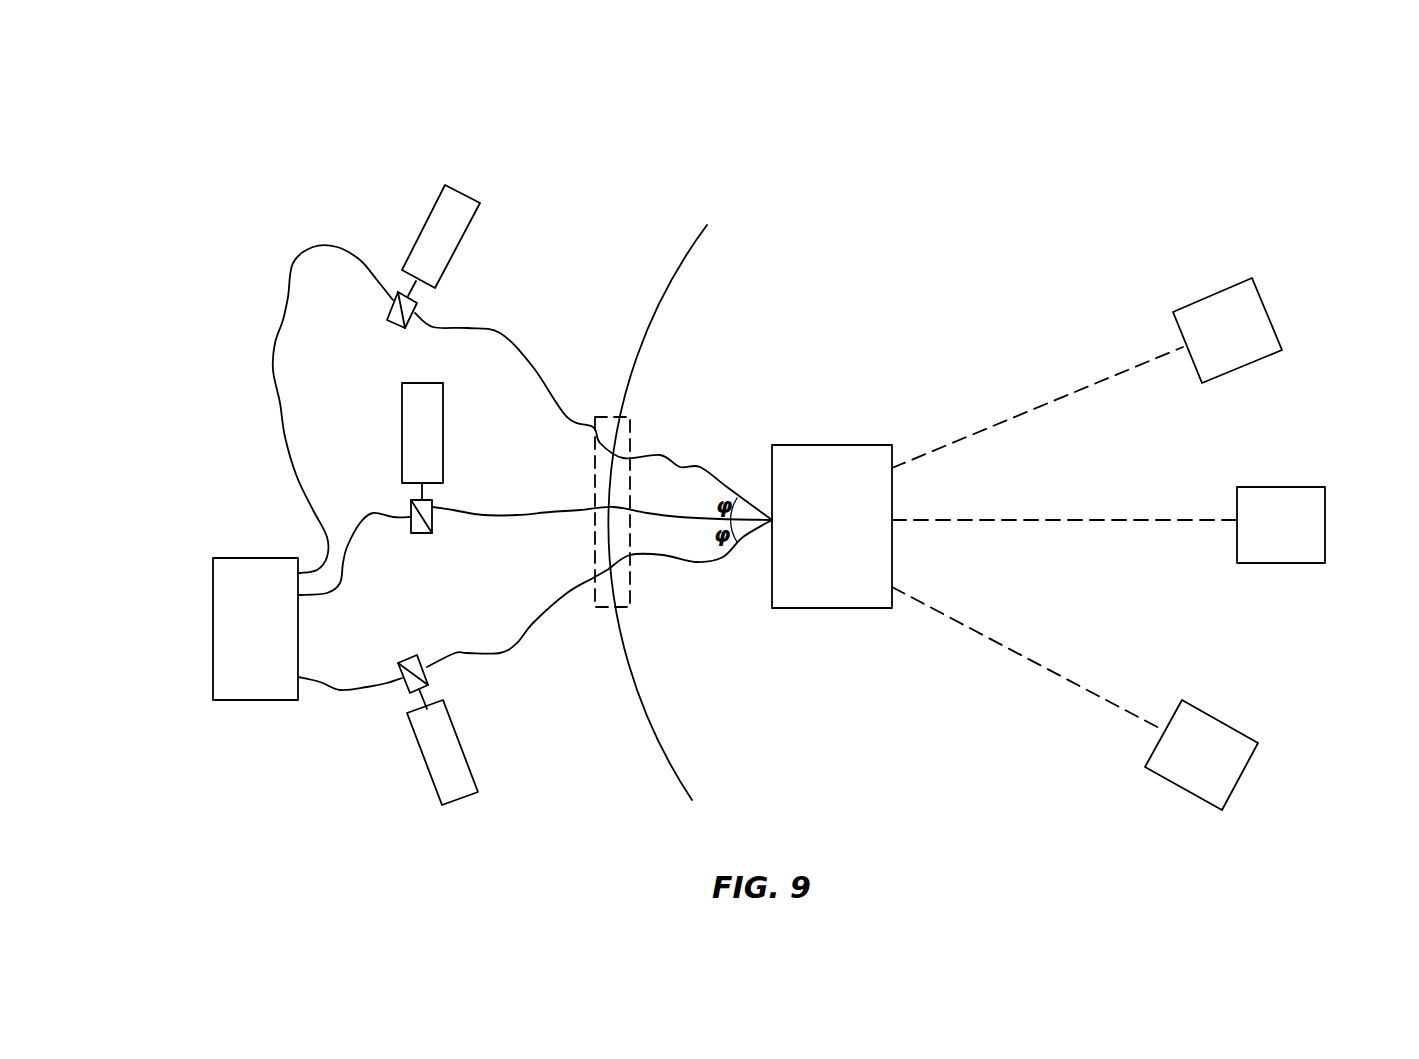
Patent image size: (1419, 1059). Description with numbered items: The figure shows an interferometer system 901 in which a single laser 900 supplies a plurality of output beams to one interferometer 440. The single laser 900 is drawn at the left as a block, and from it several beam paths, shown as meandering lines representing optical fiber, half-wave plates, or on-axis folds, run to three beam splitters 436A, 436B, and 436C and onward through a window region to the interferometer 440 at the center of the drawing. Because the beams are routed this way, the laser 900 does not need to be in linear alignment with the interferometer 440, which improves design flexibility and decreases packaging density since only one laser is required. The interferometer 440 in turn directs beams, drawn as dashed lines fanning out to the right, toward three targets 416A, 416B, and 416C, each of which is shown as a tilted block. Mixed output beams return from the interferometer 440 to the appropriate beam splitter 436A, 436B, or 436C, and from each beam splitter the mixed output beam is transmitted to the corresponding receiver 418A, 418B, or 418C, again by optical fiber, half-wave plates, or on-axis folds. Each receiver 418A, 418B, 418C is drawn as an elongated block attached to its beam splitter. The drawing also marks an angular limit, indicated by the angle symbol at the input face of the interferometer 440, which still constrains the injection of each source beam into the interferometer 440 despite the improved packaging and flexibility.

The interferometer system 901 is at (511, 113).
The single laser 900 is at (250, 700).
The receiver 418A is at (472, 195).
The receiver 418B is at (443, 437).
The receiver 418C is at (467, 795).
The beam splitter 436A is at (417, 305).
The beam splitter 436B is at (433, 505).
The beam splitter 436C is at (418, 655).
The interferometer 440 is at (815, 425).
The target 416A is at (1222, 722).
The target 416B is at (1280, 485).
The target 416C is at (1215, 292).